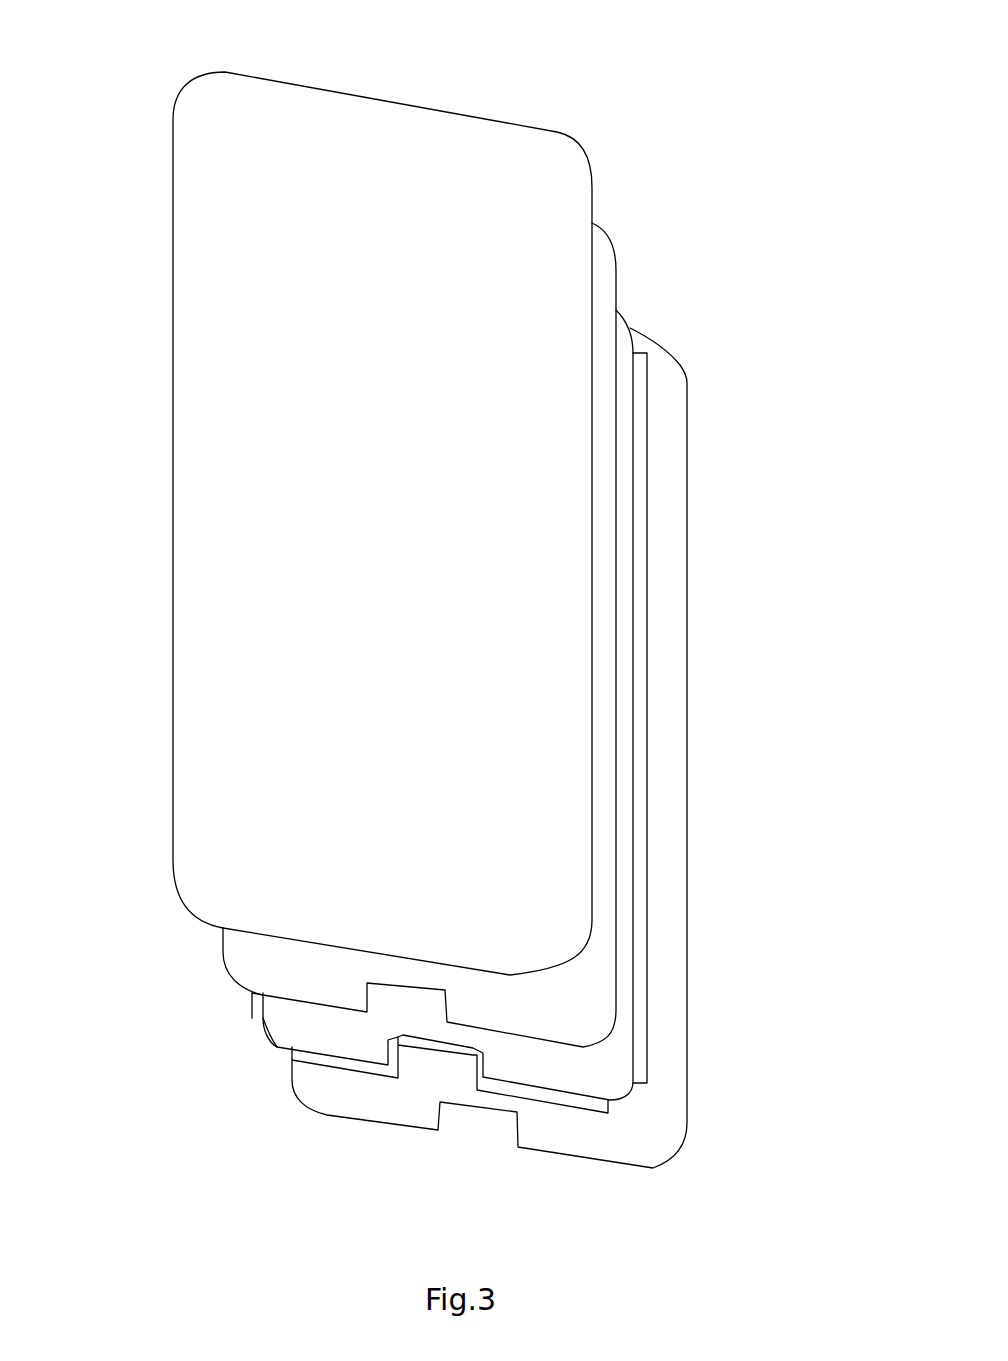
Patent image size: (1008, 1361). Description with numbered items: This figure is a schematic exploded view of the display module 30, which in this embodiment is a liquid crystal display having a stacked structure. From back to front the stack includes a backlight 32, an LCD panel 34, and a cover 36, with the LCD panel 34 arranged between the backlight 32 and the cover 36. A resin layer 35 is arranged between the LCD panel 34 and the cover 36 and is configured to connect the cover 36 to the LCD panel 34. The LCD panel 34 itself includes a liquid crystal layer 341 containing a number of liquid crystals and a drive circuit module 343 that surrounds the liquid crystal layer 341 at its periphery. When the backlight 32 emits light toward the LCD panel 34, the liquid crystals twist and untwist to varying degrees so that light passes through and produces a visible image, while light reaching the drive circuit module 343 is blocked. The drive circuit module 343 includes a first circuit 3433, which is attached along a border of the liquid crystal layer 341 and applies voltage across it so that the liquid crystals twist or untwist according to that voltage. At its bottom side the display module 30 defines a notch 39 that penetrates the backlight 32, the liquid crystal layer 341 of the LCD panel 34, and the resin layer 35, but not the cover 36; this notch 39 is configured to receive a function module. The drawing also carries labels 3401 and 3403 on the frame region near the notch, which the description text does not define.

The display module 30 is at (137, 50).
The cover 36 is at (203, 850).
The resin layer 35 is at (248, 947).
The LCD panel 34 is at (818, 927).
The liquid crystal layer 341 is at (628, 1050).
The drive circuit module 343 is at (665, 960).
The receiving groove 3401 is at (285, 1018).
The side wall 3403 is at (270, 1070).
The first circuit 3433 is at (335, 1060).
The notch 39 is at (457, 1087).
The backlight 32 is at (670, 1132).